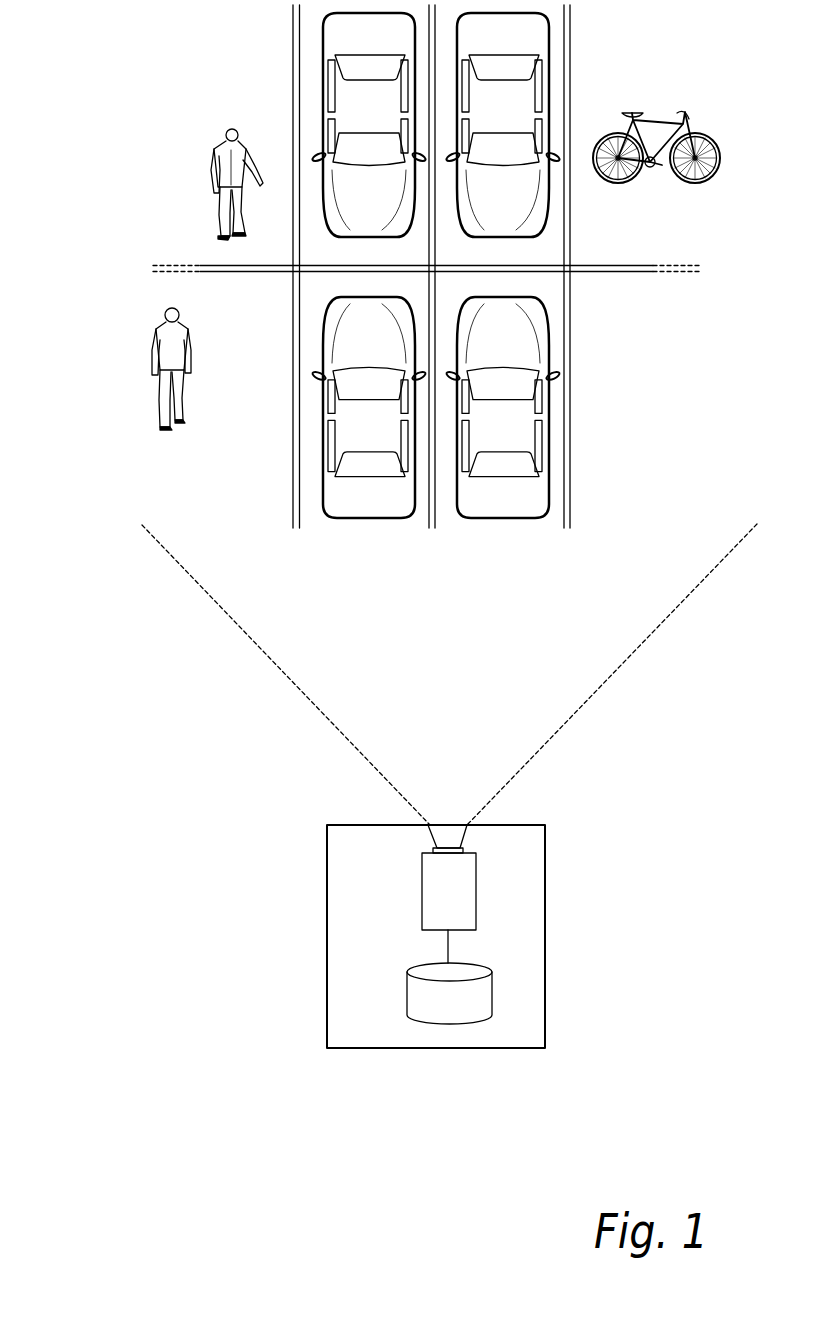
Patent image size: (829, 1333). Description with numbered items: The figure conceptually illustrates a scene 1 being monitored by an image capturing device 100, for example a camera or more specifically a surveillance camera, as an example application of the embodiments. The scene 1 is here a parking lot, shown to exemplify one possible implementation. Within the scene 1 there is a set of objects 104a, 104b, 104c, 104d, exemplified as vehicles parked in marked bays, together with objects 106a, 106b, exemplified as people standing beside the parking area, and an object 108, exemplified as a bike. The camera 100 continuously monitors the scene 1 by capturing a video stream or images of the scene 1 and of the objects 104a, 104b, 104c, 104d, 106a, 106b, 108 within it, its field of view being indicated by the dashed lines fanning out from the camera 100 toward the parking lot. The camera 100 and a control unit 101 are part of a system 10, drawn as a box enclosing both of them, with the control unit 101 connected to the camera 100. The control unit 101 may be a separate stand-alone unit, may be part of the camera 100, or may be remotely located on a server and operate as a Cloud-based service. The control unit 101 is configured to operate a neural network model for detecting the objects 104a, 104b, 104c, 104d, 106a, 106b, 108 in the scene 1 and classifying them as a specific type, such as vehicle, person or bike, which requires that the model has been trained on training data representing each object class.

The scene 1 is at (207, 35).
The system 10 is at (375, 884).
The image capturing device 100 is at (468, 903).
The control unit 101 is at (470, 1014).
The object 104a is at (393, 436).
The object 104b is at (393, 120).
The object 104c is at (527, 120).
The object 104d is at (527, 436).
The object 106a is at (228, 144).
The object 106b is at (160, 327).
The object 108 is at (658, 120).